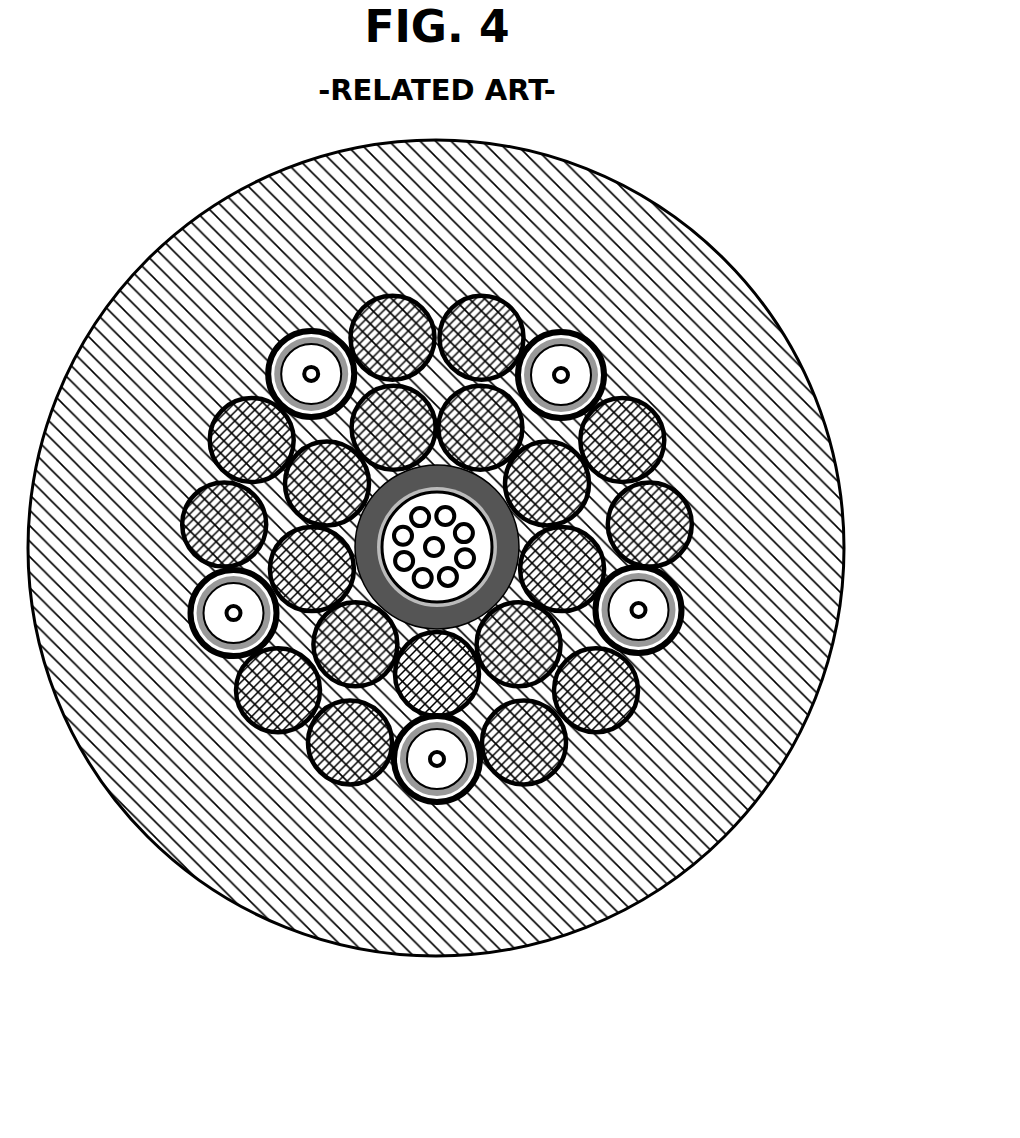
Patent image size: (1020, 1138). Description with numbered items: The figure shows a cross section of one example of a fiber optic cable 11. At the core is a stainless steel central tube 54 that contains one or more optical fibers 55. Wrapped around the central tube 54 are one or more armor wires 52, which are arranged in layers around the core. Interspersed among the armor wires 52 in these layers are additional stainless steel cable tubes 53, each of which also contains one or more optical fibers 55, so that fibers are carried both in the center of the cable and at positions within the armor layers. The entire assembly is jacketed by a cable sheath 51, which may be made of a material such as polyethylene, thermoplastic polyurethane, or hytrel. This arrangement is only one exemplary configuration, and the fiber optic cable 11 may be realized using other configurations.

The fiber optic cable 11 is at (118, 155).
The cable sheath 51 is at (87, 330).
The armor wires 52 is at (500, 302).
The stainless steel cable tubes 53 is at (587, 343).
The stainless steel central tube 54 is at (621, 407).
The optical fibers 55 is at (638, 610).